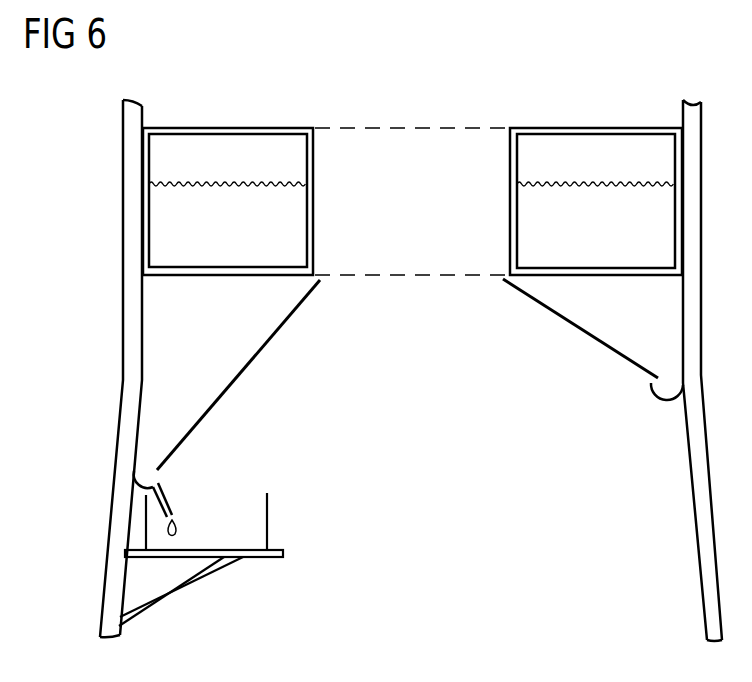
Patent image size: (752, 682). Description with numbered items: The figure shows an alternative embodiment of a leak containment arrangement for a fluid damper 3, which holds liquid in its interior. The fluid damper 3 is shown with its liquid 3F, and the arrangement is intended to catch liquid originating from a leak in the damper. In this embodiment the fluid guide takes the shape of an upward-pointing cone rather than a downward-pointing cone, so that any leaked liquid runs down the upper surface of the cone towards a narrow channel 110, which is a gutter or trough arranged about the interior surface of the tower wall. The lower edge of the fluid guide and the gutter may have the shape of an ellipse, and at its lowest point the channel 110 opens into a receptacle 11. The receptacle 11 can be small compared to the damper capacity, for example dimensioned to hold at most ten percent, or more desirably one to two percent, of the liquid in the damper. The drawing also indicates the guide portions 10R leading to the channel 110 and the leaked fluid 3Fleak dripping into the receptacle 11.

The fluid damper 3 is at (478, 100).
The fluid 3F is at (599, 204).
The return line 10R is at (272, 341).
The channel 110 is at (156, 471).
The leaked fluid 3Fleak is at (168, 527).
The receptacle 11 is at (268, 520).